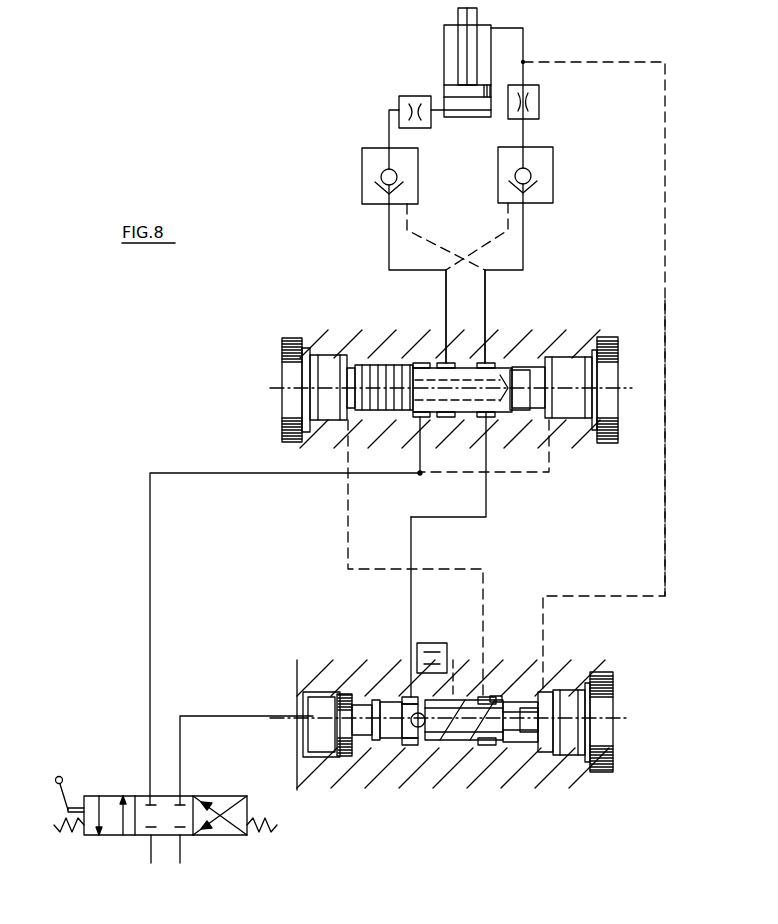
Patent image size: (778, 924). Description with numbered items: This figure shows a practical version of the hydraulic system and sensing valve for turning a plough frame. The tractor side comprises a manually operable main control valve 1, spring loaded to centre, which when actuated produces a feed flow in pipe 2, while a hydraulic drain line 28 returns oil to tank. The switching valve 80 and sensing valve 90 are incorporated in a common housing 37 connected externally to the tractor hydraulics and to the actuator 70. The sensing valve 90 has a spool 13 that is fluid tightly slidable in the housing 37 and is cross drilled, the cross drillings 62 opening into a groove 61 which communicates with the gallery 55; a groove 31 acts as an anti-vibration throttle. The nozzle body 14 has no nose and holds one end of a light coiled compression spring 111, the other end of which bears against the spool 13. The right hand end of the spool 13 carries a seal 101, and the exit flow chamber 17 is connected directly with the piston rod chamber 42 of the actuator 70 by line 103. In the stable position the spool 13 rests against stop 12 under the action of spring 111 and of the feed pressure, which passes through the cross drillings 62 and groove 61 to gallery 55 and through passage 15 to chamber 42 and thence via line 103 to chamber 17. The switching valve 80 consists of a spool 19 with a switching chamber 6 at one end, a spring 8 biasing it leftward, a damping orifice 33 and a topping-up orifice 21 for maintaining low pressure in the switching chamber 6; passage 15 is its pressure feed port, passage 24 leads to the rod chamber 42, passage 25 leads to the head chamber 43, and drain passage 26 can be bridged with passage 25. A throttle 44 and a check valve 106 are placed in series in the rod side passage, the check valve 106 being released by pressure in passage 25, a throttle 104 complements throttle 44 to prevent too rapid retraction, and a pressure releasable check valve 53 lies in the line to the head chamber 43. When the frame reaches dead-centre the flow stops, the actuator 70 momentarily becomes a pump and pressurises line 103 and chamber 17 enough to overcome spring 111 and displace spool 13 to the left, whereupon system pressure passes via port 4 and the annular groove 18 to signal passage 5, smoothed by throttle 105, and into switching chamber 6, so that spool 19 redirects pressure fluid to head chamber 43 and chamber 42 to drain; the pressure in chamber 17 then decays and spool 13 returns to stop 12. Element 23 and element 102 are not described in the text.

The main control valve 1 is at (212, 786).
The pipe 2 is at (180, 760).
The port 4 is at (452, 658).
The signal passage 5 is at (348, 538).
The switching chamber 6 is at (352, 362).
The spring 8 is at (567, 407).
The stop 12 is at (528, 745).
The spool 13 is at (488, 748).
The nozzle body 14 is at (333, 758).
The passage 15 is at (442, 517).
The exit flow chamber 17 is at (513, 746).
The annular groove 18 is at (462, 748).
The spool 19 is at (462, 465).
The topping-up orifice 21 is at (407, 365).
The control line 23 is at (548, 463).
The passage 24 is at (485, 287).
The passage 25 is at (446, 283).
The drain passage 26 is at (420, 453).
The hydraulic drain line 28 is at (186, 473).
The groove 31 is at (392, 745).
The damping orifice 33 is at (502, 388).
The housing 37 is at (567, 333).
The piston rod chamber 42 is at (448, 33).
The head chamber 43 is at (455, 113).
The throttle 44 is at (539, 98).
The pressure releasable check valve 53 is at (362, 163).
The gallery 55 is at (407, 665).
The groove 61 is at (413, 698).
The cross drillings 62 is at (412, 745).
The actuator 70 is at (544, 56).
The switching valve 80 is at (627, 356).
The sensing valve 90 is at (620, 680).
The seal 101 is at (493, 700).
The sleeve 102 is at (380, 757).
The line 103 is at (562, 595).
The throttle 104 is at (407, 96).
The throttle 105 is at (433, 643).
The check valve 106 is at (553, 162).
The light coiled compression spring 111 is at (362, 773).